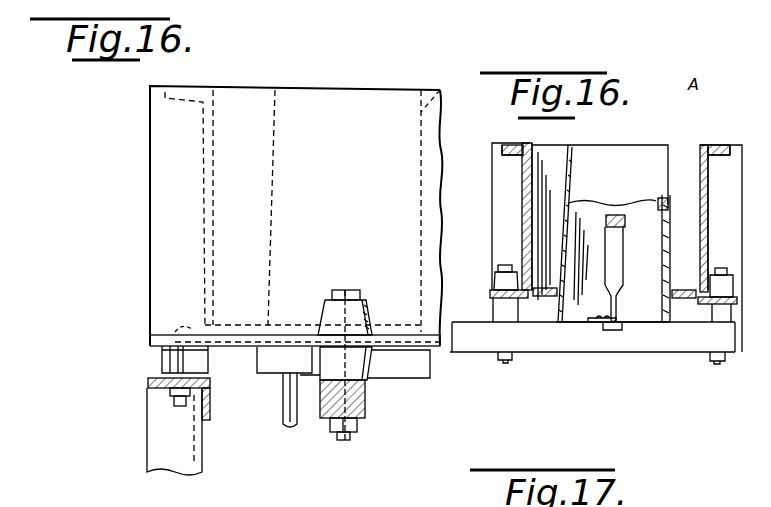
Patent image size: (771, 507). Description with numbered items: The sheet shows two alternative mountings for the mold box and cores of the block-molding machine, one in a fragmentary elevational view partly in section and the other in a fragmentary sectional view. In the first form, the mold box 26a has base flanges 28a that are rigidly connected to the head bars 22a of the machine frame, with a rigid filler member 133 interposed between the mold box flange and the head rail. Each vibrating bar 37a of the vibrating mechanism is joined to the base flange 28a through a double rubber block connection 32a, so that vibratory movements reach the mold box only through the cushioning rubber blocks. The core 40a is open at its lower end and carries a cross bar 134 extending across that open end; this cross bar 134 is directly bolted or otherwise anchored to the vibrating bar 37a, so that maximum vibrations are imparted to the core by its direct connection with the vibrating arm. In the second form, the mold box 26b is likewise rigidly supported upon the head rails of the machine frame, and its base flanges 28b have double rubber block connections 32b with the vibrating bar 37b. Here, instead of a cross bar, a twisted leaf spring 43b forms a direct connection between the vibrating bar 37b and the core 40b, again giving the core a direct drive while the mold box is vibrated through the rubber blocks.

In FIG. 16, the mold box 26a is at (205, 218).
In FIG. 16, the base flange 28a is at (150, 340).
In FIG. 16, the head bar 22a is at (150, 382).
In FIG. 16, the double rubber block connection 32a is at (368, 312).
In FIG. 16, the vibrating bar 37a is at (365, 410).
In FIG. 16, the core 40a is at (440, 90).
In FIG. 16, the rigid filler member 133 is at (207, 369).
In FIG. 16, the cross bar 134 is at (305, 428).
In FIG. 16A, the mold box 26b is at (594, 247).
In FIG. 16A, the base flange 28b is at (498, 303).
In FIG. 16A, the double rubber block connection 32b is at (725, 303).
In FIG. 16A, the vibrating bar 37b is at (623, 337).
In FIG. 16A, the core 40b is at (668, 178).
In FIG. 16A, the twisted leaf spring 43b is at (613, 236).